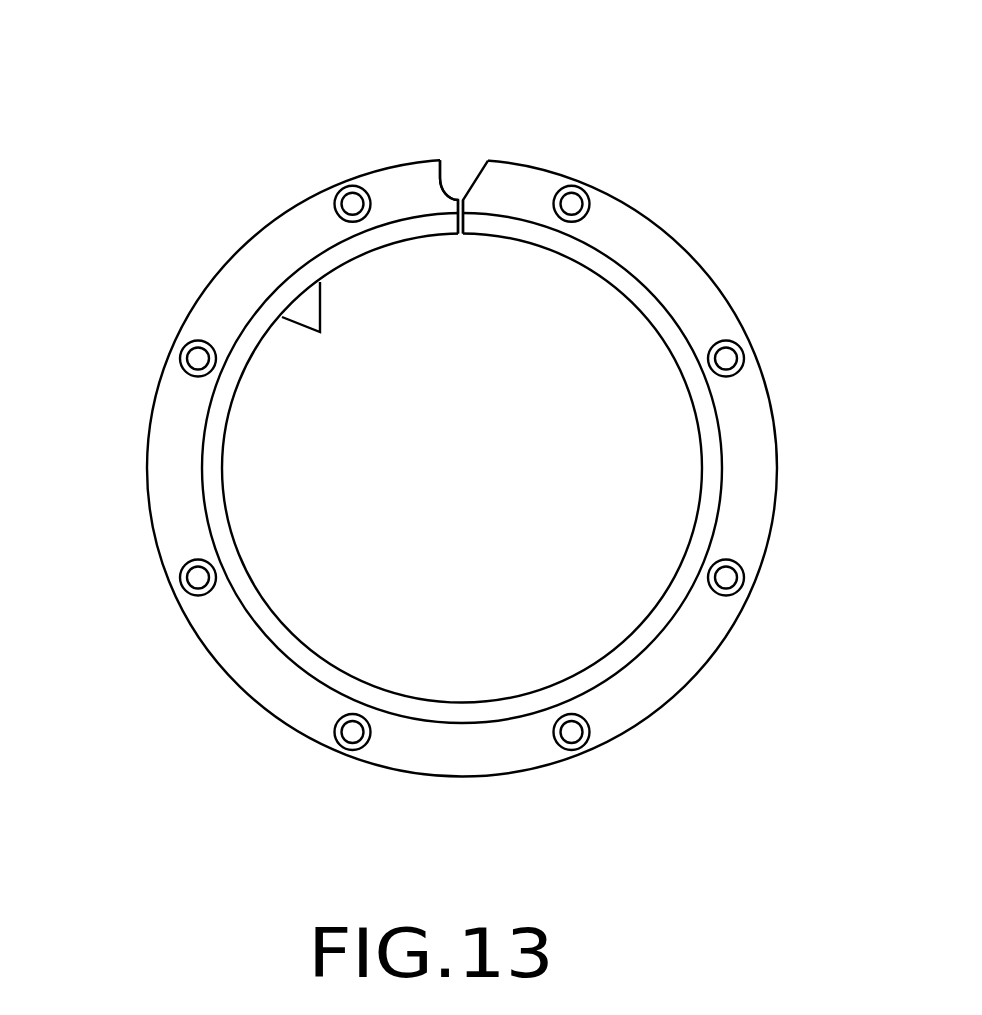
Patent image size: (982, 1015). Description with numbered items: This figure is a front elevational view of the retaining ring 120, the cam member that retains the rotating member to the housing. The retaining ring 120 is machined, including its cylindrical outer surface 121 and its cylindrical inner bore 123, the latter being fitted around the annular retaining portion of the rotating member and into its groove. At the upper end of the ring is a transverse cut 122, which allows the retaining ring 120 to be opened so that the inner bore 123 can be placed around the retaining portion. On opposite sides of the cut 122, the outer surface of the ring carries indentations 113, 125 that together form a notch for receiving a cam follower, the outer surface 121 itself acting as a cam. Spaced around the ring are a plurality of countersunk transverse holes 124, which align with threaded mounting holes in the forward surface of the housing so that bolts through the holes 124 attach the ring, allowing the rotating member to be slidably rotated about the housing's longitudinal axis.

The retaining ring 120 is at (283, 723).
The cylindrical outer surface 121 is at (385, 168).
The indentation 113 is at (455, 167).
The indentation 125 is at (477, 160).
The transverse cut 122 is at (465, 213).
The cylindrical inner bore 123 is at (282, 317).
The countersunk transverse holes 124 is at (743, 347).